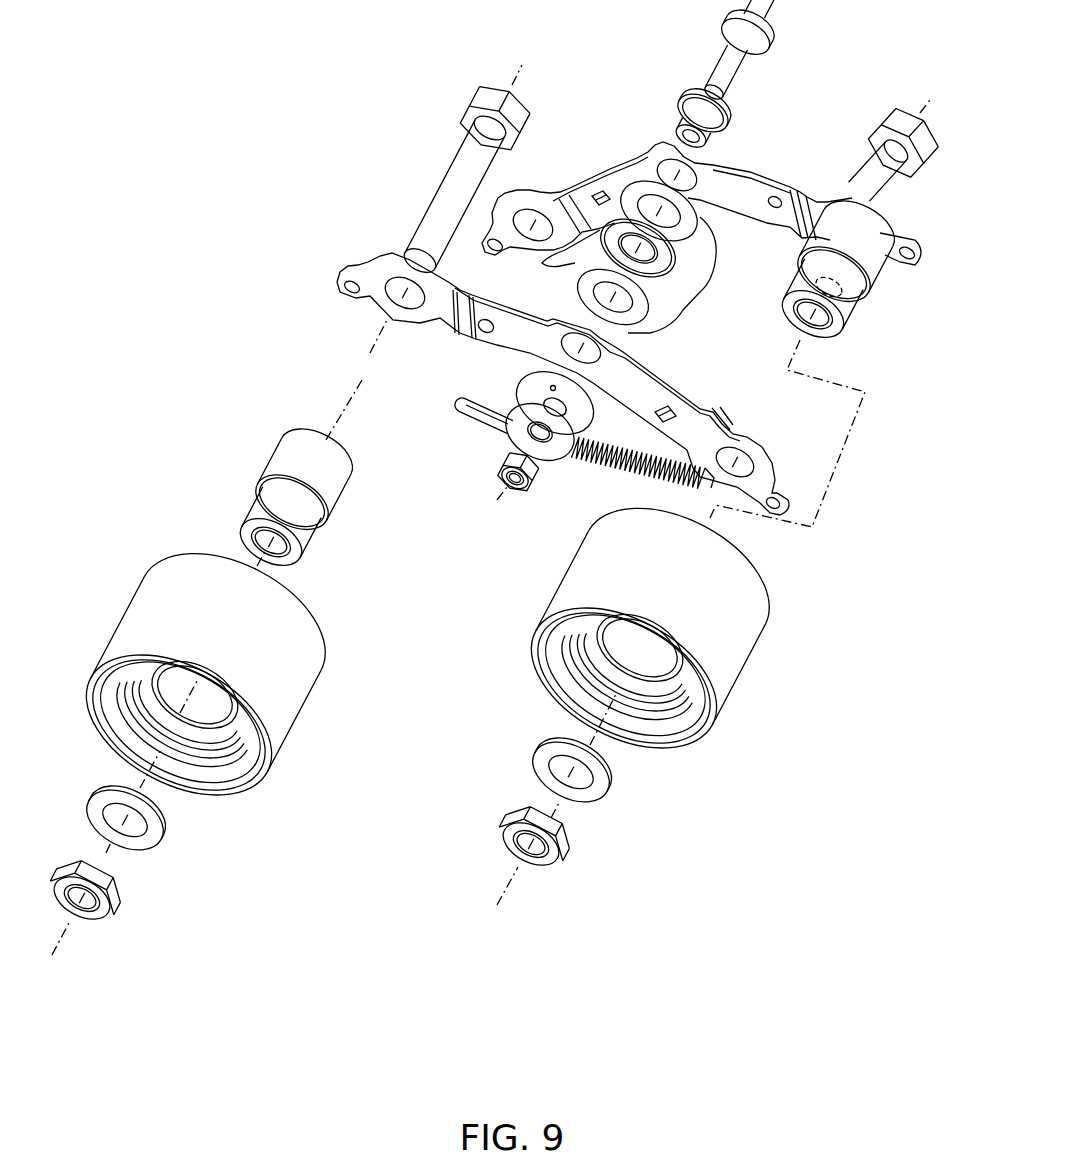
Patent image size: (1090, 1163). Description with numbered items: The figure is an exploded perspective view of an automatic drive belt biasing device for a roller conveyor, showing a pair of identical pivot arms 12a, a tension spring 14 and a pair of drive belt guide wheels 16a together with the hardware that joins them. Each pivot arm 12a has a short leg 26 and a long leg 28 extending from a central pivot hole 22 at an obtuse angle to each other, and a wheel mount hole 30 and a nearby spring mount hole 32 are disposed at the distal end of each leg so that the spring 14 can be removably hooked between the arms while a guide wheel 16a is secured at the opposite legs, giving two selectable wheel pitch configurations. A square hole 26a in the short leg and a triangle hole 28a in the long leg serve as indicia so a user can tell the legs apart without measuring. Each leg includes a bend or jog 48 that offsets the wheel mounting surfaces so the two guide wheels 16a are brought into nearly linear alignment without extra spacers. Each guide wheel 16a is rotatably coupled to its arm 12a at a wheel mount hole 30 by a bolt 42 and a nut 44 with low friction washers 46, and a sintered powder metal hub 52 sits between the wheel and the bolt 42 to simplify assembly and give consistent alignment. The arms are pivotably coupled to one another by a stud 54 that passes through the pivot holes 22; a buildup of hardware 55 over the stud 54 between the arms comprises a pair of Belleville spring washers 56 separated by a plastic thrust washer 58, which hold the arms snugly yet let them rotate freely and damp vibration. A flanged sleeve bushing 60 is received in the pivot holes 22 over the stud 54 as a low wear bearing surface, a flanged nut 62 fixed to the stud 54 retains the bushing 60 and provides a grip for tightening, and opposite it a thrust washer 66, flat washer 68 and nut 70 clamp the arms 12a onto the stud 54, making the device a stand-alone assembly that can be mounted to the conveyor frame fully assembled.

The pivot arm 12a is at (497, 338).
The tension spring 14 is at (610, 470).
The guide wheel 16a is at (283, 696).
The pivot hole 22 is at (672, 160).
The short leg 26 is at (625, 408).
The square hole 26a is at (598, 193).
The long leg 28 is at (622, 299).
The triangle hole 28a is at (480, 333).
The wheel mount hole 30 is at (392, 275).
The spring mount hole 32 is at (340, 293).
The bolt 42 is at (460, 160).
The nut 44 is at (124, 886).
The low friction washer 46 is at (152, 832).
The jog 48 is at (474, 285).
The hub 52 is at (274, 464).
The stud 54 is at (737, 72).
The buildup of hardware 55 is at (700, 285).
The spring washer 56 is at (682, 235).
The thrust washer 58 is at (612, 255).
The sleeve bushing 60 is at (717, 123).
The flanged nut 62 is at (772, 40).
The thrust washer 66 is at (528, 388).
The flat washer 68 is at (518, 435).
The nut 70 is at (497, 468).